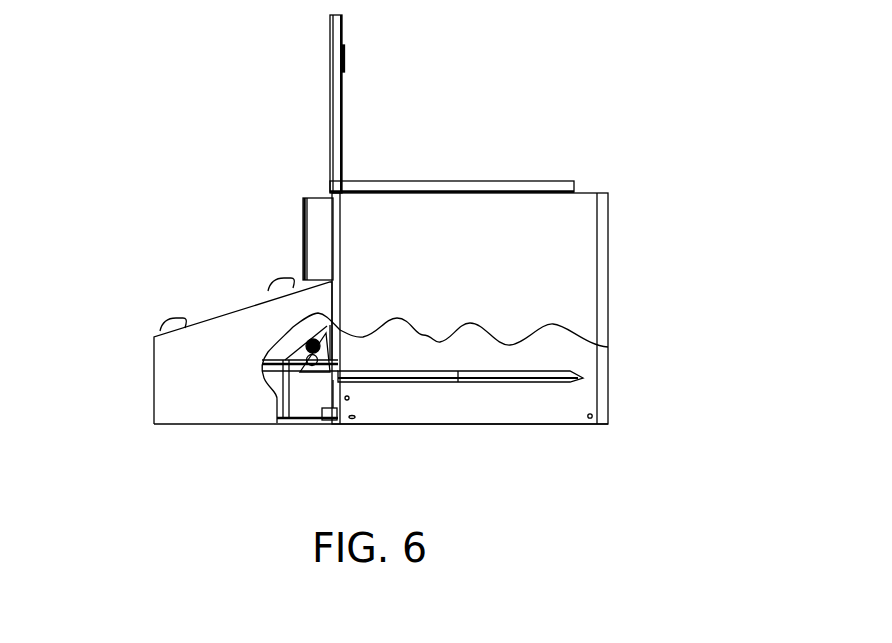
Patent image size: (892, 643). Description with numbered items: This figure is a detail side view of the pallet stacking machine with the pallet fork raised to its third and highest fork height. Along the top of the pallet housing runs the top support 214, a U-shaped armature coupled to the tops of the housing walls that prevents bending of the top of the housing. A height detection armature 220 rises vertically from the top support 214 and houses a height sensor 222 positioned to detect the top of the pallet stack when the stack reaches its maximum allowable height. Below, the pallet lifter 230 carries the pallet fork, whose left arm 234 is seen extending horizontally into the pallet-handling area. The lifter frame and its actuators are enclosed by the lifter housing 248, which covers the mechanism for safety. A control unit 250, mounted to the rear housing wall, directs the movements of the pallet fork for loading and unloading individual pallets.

The top support 214 is at (533, 178).
The height detection armature 220 is at (345, 125).
The height sensor 222 is at (345, 61).
The pallet lifter 230 is at (607, 440).
The left arm 234 is at (583, 378).
The lifter housing 248 is at (188, 390).
The control unit 250 is at (304, 198).